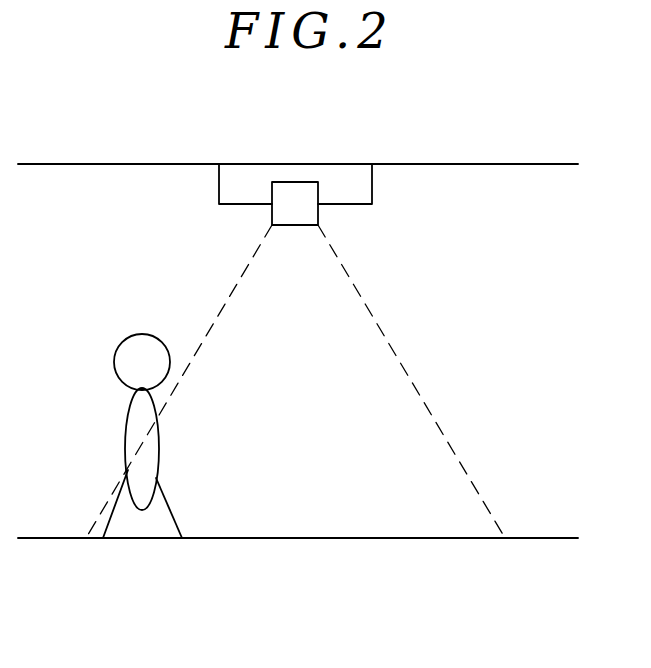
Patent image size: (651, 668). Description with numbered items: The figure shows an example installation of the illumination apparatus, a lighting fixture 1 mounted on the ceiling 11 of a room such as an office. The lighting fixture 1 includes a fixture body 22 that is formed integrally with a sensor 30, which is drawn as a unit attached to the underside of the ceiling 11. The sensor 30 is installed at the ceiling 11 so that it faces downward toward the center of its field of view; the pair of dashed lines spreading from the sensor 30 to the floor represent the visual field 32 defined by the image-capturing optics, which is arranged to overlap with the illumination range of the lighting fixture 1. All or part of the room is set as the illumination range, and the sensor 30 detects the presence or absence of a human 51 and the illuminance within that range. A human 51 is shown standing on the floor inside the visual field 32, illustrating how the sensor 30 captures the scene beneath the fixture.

The lighting fixture 1 is at (299, 190).
The ceiling 11 is at (73, 165).
The fixture body 22 is at (344, 167).
The sensor 30 is at (318, 215).
The visual field 32 is at (408, 377).
The human 51 is at (140, 335).